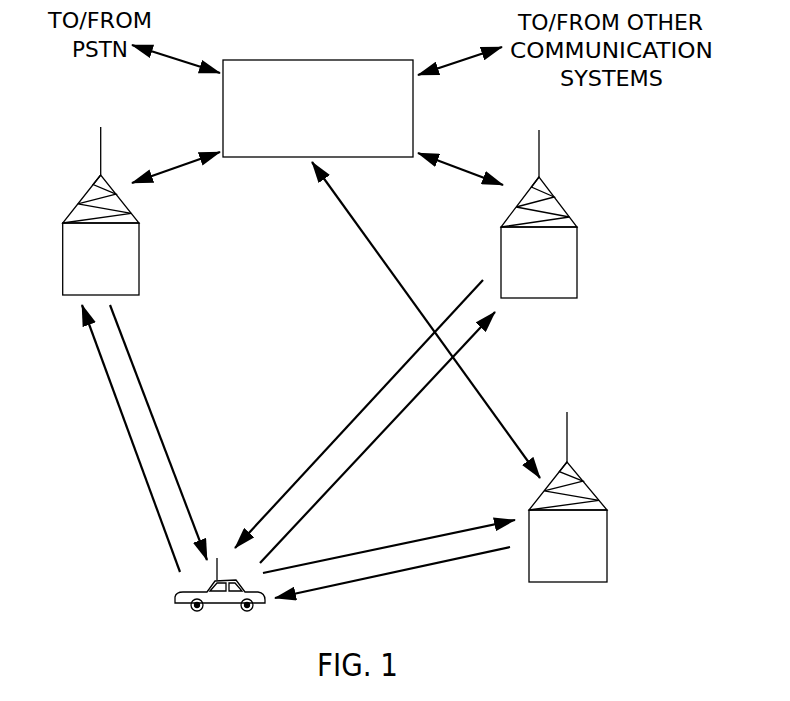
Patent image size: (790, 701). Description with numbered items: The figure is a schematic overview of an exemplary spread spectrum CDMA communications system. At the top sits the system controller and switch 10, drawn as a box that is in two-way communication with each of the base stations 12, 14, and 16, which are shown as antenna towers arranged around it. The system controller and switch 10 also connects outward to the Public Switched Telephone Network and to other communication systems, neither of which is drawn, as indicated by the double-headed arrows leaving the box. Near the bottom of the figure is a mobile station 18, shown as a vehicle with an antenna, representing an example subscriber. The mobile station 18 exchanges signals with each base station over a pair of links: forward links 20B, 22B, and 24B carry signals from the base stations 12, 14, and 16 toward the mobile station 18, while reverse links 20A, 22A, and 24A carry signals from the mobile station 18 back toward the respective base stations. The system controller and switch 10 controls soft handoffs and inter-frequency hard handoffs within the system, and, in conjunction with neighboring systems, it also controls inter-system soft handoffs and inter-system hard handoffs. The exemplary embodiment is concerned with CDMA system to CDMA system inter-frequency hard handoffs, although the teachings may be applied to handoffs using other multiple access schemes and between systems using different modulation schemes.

The system controller and switch 10 is at (353, 60).
The base station 12 is at (88, 195).
The base station 14 is at (553, 200).
The base station 16 is at (587, 478).
The mobile station 18 is at (230, 610).
The reverse link 20A is at (121, 416).
The forward link 20B is at (160, 432).
The reverse link 22A is at (380, 433).
The forward link 22B is at (353, 420).
The reverse link 24A is at (412, 538).
The forward link 24B is at (380, 577).